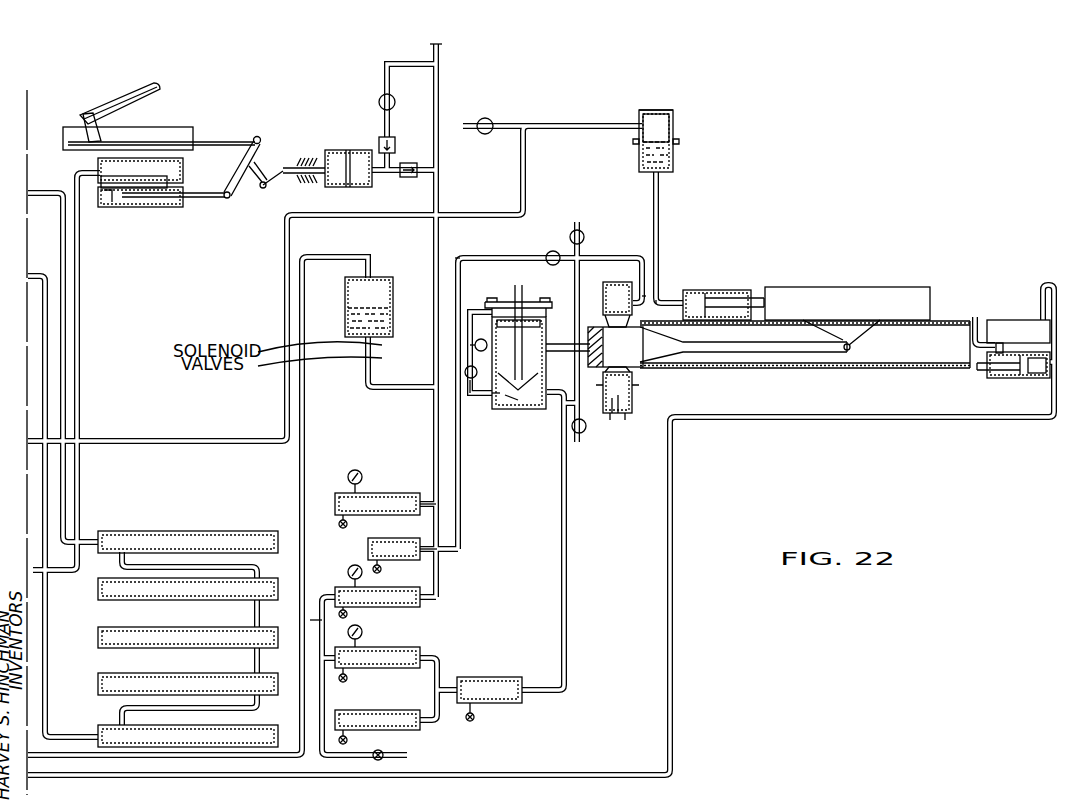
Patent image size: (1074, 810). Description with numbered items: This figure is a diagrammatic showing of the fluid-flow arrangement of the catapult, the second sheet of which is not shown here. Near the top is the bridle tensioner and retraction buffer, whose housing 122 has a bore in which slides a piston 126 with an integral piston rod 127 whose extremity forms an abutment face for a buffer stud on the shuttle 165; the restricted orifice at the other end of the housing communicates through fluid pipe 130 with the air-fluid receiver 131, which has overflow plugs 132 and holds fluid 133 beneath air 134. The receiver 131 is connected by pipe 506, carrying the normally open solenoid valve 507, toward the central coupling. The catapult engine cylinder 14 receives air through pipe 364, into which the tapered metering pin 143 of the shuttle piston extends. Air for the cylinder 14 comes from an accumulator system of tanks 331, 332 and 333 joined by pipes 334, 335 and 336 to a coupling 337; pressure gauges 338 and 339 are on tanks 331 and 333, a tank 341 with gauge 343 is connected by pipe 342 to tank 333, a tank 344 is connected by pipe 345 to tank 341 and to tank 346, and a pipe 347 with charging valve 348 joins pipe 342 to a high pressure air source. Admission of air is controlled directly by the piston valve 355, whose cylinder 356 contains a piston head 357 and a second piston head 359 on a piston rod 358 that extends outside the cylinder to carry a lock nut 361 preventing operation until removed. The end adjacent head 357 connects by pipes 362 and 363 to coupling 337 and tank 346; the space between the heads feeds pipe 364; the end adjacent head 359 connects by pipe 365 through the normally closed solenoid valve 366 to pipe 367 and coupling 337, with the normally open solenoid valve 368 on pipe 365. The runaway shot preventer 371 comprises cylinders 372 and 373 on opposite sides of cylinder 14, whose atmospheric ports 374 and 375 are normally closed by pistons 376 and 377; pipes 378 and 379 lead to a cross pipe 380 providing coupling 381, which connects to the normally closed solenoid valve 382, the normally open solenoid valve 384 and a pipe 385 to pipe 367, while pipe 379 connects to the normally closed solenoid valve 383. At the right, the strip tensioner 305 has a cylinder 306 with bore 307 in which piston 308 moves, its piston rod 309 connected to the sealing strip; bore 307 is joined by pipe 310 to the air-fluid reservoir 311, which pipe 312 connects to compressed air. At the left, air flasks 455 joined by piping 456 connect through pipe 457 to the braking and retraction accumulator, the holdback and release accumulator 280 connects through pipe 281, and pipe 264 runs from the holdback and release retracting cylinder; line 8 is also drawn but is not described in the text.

The hydraulic line 8 is at (42, 348).
The catapult engine cylinder 14 is at (740, 370).
The housing 122 is at (742, 290).
The piston 126 is at (708, 292).
The piston rod 127 is at (764, 303).
The fluid pipe 130 is at (660, 236).
The air-fluid receiver 131 is at (673, 156).
The overflow plugs 132 is at (679, 140).
The fluid 133 is at (668, 122).
The air 134 is at (660, 108).
The tapered metering pin 143 is at (615, 347).
The shuttle 165 is at (847, 292).
The pipe 264 is at (83, 249).
The holdback and release accumulator 280 is at (395, 278).
The pipe 281 is at (339, 256).
The strip tensioner 305 is at (996, 320).
The cylinder 306 is at (1010, 379).
The bore 307 is at (1036, 378).
The piston 308 is at (1020, 376).
The piston rod 309 is at (977, 368).
The pipe 310 is at (975, 320).
The air-fluid reservoir 311 is at (1015, 331).
The pipe 312 is at (1051, 283).
The tank 331 is at (389, 493).
The tank 332 is at (368, 552).
The tank 333 is at (387, 587).
The pipe 334 is at (442, 513).
The pipe 335 is at (434, 545).
The pipe 336 is at (440, 590).
The coupling 337 is at (445, 549).
The pressure gauge 338 is at (359, 470).
The pressure gauge 339 is at (348, 573).
The tank 341 is at (410, 647).
The pipe 342 is at (316, 620).
The pressure gauge 343 is at (362, 630).
The tank 344 is at (386, 710).
The pipe 345 is at (468, 722).
The tank 346 is at (479, 677).
The pipe 347 is at (325, 704).
The charging valve 348 is at (384, 753).
The piston valve 355 is at (492, 385).
The cylinder 356 is at (528, 395).
The piston head 357 is at (500, 406).
The piston rod 358 is at (505, 392).
The second piston head 359 is at (524, 310).
The lock nut 361 is at (499, 301).
The pipe 362 is at (486, 396).
The pipe 363 is at (551, 398).
The pipe 364 is at (561, 343).
The pipe 365 is at (468, 311).
The solenoid valve 366 is at (465, 370).
The pipe 367 is at (464, 382).
The solenoid valve 368 is at (475, 347).
The runaway shot preventer 371 is at (634, 407).
The cylinder 372 is at (627, 282).
The cylinder 373 is at (622, 417).
The atmospheric port 374 is at (652, 300).
The atmospheric port 375 is at (636, 394).
The piston 376 is at (645, 295).
The piston 377 is at (586, 430).
The pipe 378 is at (607, 257).
The pipe 379 is at (573, 420).
The cross pipe 380 is at (547, 301).
The coupling 381 is at (582, 250).
The solenoid valve 382 is at (573, 231).
The solenoid valve 383 is at (563, 432).
The solenoid valve 384 is at (550, 251).
The pipe 385 is at (457, 261).
The air flasks 455 is at (170, 531).
The piping 456 is at (257, 604).
The pipe 457 is at (66, 366).
The pipe 506 is at (572, 123).
The solenoid valve 507 is at (490, 118).